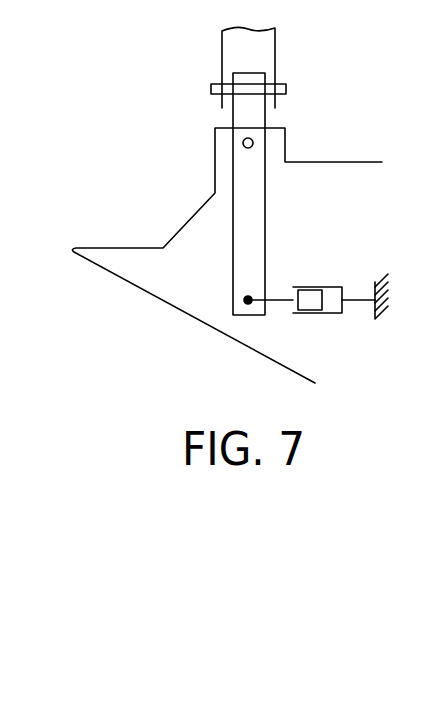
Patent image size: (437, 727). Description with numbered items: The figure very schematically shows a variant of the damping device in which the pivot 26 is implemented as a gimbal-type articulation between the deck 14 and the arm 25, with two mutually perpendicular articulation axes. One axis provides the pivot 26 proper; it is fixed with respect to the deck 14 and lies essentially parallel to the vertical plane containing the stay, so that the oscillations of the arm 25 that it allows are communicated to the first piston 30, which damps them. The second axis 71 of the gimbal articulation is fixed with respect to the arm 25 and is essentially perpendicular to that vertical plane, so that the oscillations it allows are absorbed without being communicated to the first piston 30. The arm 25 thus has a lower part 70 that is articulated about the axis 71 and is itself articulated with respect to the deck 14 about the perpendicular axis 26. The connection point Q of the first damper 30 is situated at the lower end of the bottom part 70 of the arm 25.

The arm 25 is at (222, 50).
The second axis 71 is at (288, 88).
The lower part 70 is at (265, 243).
The pivot 26 is at (243, 141).
The deck 14 is at (185, 222).
The connection point Q is at (243, 303).
The first piston 30 is at (317, 315).